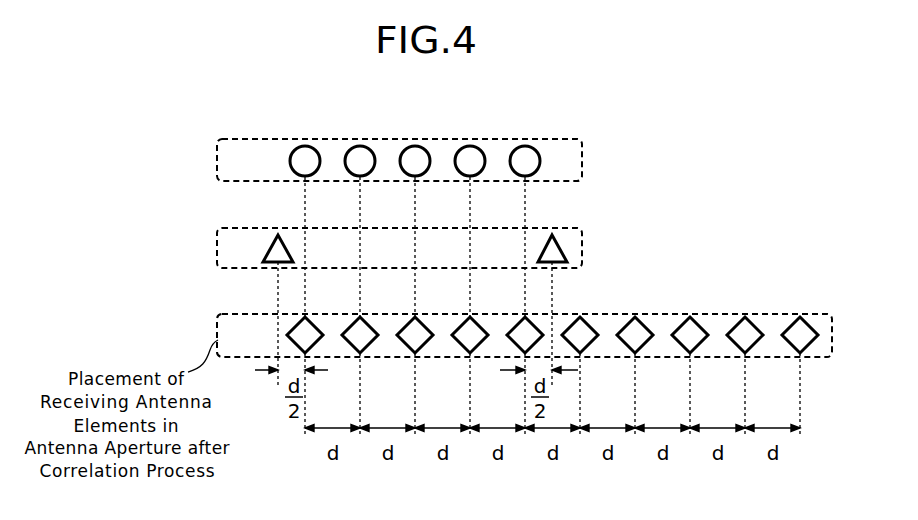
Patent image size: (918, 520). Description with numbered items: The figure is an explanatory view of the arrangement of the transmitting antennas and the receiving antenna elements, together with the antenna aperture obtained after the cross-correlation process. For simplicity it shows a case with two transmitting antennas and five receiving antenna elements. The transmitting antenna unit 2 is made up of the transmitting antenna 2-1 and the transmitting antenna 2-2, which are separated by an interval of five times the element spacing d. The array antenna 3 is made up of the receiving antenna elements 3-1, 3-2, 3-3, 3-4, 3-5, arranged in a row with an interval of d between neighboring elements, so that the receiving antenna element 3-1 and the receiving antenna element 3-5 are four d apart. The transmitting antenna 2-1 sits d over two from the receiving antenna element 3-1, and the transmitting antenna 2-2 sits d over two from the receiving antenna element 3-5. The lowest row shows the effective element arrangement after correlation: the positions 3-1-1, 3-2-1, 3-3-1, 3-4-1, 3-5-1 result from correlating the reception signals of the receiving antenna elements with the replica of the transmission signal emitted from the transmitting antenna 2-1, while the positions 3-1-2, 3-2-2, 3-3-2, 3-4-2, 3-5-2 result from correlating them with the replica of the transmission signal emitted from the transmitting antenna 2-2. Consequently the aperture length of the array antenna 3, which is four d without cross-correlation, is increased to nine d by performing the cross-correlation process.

The transmitting antenna unit 2 is at (216, 244).
The transmitting antenna 2-1 is at (275, 239).
The transmitting antenna 2-2 is at (558, 239).
The array antenna 3 is at (216, 162).
The receiving antenna element 3-1 is at (300, 147).
The receiving antenna element 3-2 is at (355, 147).
The receiving antenna element 3-3 is at (410, 147).
The receiving antenna element 3-4 is at (465, 147).
The receiving antenna element 3-5 is at (520, 147).
The element arrangement of receiving antenna element 3-1 for transmission signal (1) 3-1-1 is at (294, 327).
The element arrangement of receiving antenna element 3-2 for transmission signal (1) 3-2-1 is at (349, 322).
The element arrangement of receiving antenna element 3-3 for transmission signal (1) 3-3-1 is at (406, 321).
The element arrangement of receiving antenna element 3-4 for transmission signal (1) 3-4-1 is at (457, 322).
The element arrangement of receiving antenna element 3-5 for transmission signal (1) 3-5-1 is at (518, 321).
The element arrangement of receiving antenna element 3-1 for transmission signal (2) 3-1-2 is at (583, 320).
The element arrangement of receiving antenna element 3-2 for transmission signal (2) 3-2-2 is at (632, 320).
The element arrangement of receiving antenna element 3-3 for transmission signal (2) 3-3-2 is at (686, 320).
The element arrangement of receiving antenna element 3-4 for transmission signal (2) 3-4-2 is at (743, 320).
The element arrangement of receiving antenna element 3-5 for transmission signal (2) 3-5-2 is at (797, 320).